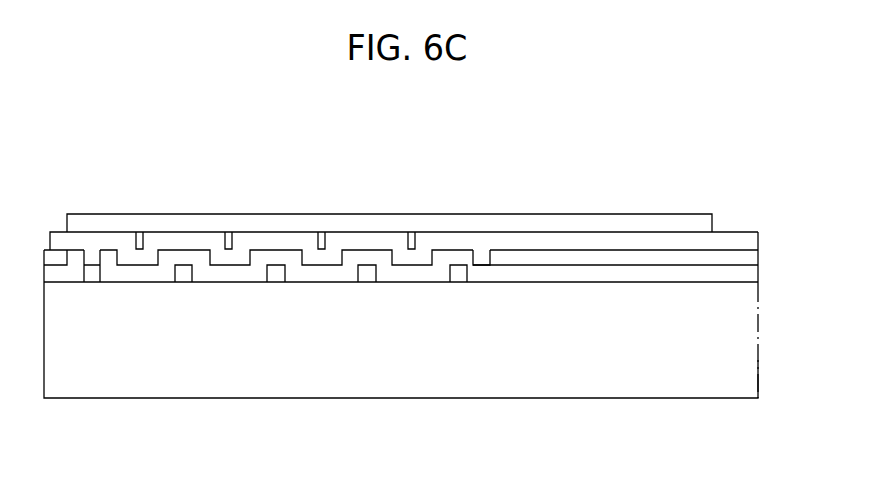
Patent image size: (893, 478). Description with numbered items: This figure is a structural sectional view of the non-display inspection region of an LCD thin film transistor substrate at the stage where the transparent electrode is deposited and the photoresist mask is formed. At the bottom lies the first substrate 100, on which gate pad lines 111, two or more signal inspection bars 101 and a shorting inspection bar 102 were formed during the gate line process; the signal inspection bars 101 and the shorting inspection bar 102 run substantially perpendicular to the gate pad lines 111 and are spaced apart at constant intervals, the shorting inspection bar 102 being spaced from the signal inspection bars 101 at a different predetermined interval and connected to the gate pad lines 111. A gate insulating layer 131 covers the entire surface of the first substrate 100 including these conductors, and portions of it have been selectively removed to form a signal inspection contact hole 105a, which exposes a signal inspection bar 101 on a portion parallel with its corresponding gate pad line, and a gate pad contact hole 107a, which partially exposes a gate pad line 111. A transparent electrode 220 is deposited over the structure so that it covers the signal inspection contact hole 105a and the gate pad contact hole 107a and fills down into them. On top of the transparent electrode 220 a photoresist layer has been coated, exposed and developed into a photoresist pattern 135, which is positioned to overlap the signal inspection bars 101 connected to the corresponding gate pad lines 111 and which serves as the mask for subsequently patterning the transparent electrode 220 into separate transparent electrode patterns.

The first substrate 100 is at (745, 333).
The gate pad lines 111 is at (745, 280).
The gate insulating layer 131 is at (745, 259).
The photoresist pattern 135 is at (618, 225).
The transparent electrode 220 is at (728, 240).
The signal inspection bars 101 is at (95, 275).
The shorting inspection bar 102 is at (460, 275).
The signal inspection contact hole 105a is at (92, 257).
The gate pad contact hole 107a is at (483, 252).